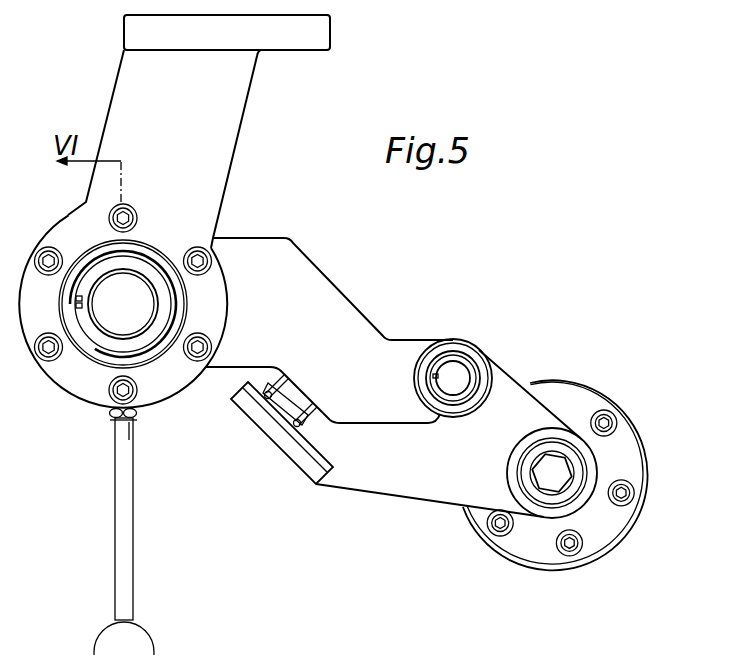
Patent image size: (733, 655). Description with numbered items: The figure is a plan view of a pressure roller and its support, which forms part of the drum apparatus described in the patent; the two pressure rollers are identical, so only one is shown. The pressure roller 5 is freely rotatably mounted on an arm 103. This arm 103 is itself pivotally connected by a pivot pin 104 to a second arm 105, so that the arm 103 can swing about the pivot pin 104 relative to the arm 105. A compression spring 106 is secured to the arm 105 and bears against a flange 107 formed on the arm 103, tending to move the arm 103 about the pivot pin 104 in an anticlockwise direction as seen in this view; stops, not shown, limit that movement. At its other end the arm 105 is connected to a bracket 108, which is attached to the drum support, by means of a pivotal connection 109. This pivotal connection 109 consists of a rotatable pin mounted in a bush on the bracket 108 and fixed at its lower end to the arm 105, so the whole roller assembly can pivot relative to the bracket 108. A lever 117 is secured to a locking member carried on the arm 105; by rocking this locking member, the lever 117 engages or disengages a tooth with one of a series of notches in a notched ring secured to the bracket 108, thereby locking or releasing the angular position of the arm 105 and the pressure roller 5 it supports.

The bracket 108 is at (218, 162).
The arm 105 is at (313, 288).
The pivot pin 104 is at (463, 375).
The compression spring 106 is at (310, 420).
The flange 107 is at (278, 445).
The arm 103 is at (425, 489).
The pivotal connection 109 is at (96, 350).
The lever 117 is at (127, 583).
The pressure roller 5 is at (547, 557).